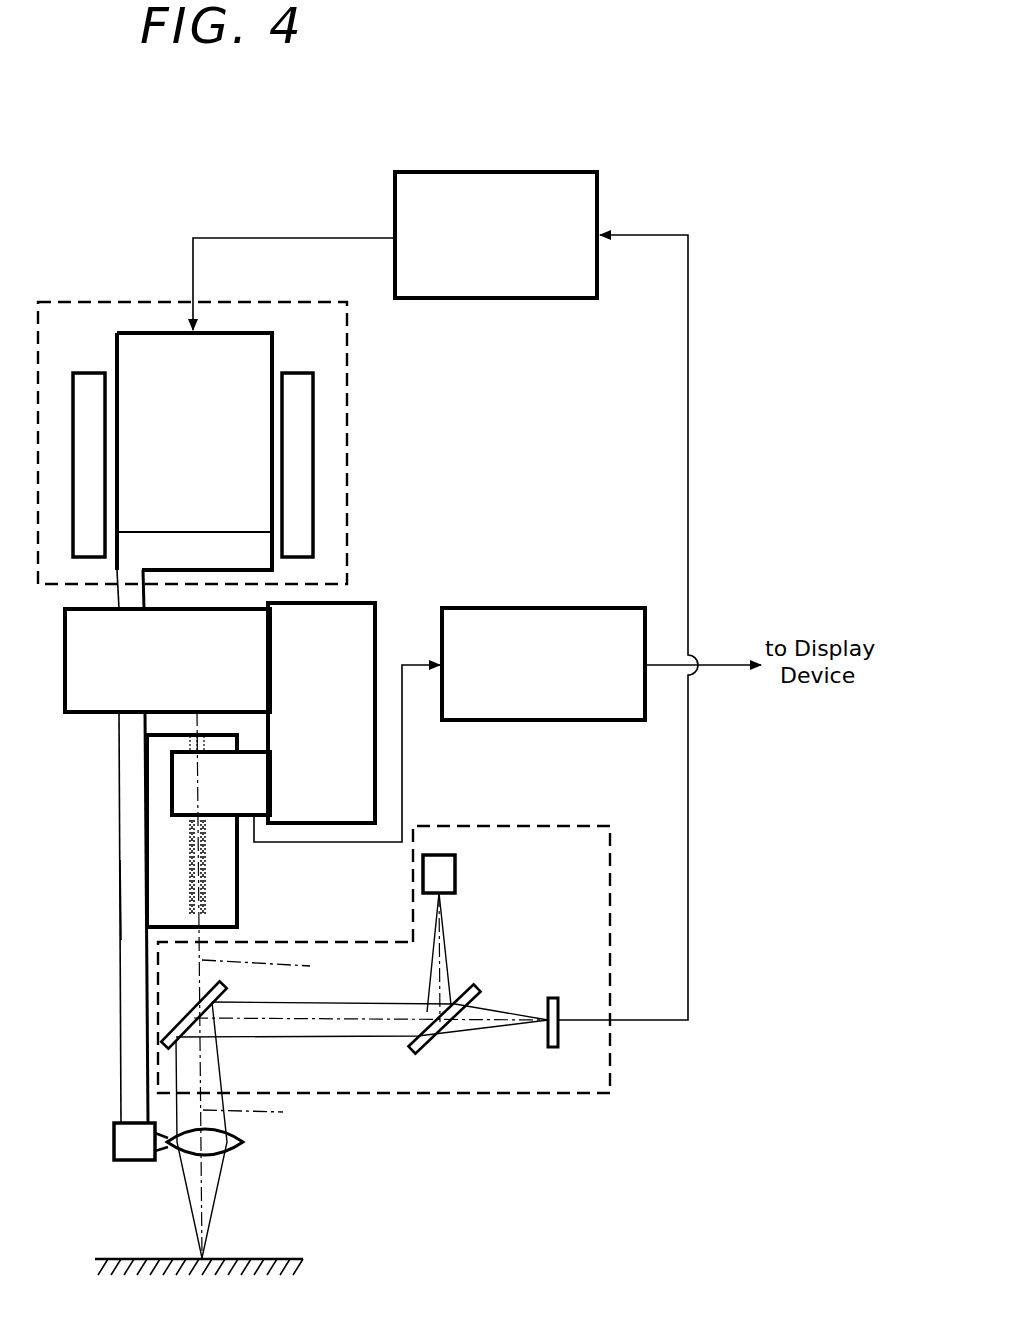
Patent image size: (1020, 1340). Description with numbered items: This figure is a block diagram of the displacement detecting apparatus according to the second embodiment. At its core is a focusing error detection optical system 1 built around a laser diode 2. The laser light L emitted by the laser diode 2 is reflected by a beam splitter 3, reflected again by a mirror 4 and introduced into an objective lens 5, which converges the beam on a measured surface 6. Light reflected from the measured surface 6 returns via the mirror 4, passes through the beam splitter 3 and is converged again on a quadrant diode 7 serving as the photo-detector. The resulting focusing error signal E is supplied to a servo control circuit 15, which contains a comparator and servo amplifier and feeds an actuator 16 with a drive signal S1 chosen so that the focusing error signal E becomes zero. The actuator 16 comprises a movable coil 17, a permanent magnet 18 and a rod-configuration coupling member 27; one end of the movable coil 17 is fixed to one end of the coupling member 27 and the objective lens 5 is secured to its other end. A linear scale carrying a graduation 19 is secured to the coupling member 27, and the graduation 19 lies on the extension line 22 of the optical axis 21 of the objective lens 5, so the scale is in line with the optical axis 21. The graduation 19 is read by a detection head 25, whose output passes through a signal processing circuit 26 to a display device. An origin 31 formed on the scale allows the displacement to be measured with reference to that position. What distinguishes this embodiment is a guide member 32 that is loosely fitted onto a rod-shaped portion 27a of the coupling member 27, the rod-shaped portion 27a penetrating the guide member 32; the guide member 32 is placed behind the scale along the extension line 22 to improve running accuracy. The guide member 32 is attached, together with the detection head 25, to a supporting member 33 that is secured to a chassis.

The focusing error detection optical system 1 is at (494, 1094).
The laser diode 2 is at (455, 878).
The beam splitter 3 is at (432, 1042).
The mirror 4 is at (192, 1012).
The objective lens 5 is at (238, 1153).
The measured surface 6 is at (138, 1258).
The quadrant diode 7 is at (558, 1040).
The servo control circuit 15 is at (512, 172).
The actuator 16 is at (100, 302).
The movable coil 17 is at (235, 333).
The permanent magnet 18 is at (86, 373).
The graduation 19 is at (207, 902).
The optical axis 21 is at (259, 1113).
The extension line 22 is at (271, 968).
The detection head 25 is at (243, 815).
The signal processing circuit 26 is at (542, 608).
The coupling member 27 is at (114, 746).
The rod-shaped portion 27a is at (130, 897).
The origin 31 is at (170, 833).
The guide member 32 is at (65, 667).
The supporting member 33 is at (376, 603).
The focusing error signal E is at (698, 920).
The laser light L is at (446, 942).
The drive signal S1 is at (294, 271).